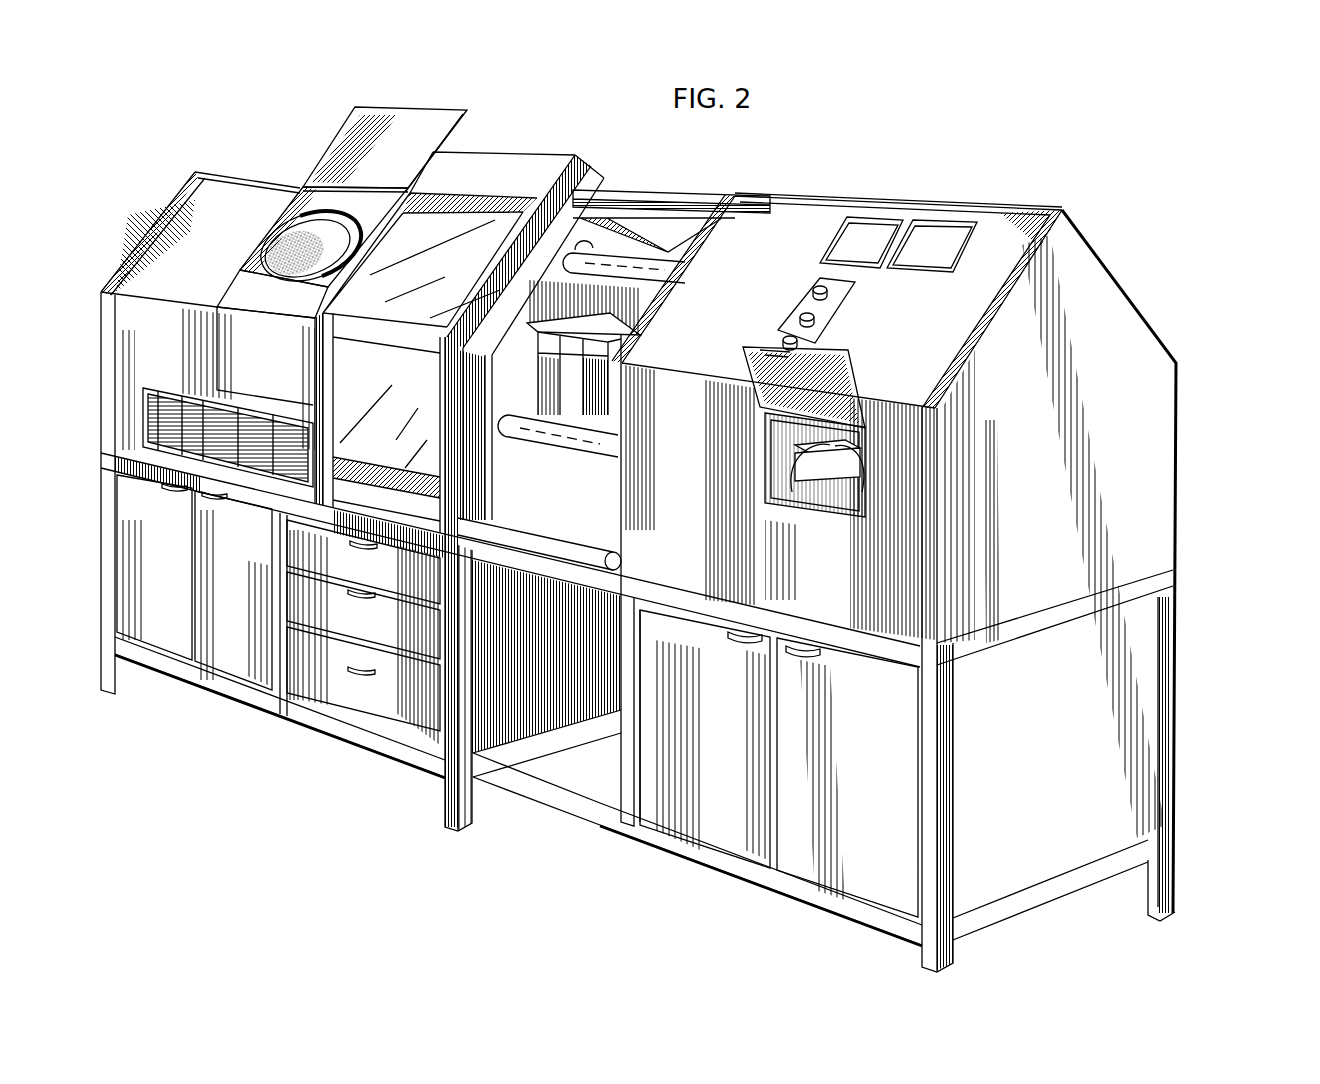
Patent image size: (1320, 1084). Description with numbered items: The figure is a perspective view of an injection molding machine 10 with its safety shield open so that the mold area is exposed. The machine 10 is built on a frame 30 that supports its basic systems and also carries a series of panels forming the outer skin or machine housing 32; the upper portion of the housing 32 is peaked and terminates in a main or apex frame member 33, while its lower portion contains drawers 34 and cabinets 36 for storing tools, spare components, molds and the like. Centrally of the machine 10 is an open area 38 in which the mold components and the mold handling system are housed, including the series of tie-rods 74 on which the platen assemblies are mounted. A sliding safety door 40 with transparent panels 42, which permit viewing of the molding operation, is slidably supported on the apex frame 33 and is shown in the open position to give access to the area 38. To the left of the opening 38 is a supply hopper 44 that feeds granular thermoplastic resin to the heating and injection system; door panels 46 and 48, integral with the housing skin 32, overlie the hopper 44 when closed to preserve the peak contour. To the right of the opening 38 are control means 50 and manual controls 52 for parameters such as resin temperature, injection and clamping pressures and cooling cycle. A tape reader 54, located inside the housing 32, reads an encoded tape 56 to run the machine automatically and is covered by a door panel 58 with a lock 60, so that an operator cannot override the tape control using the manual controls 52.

The machine 10 is at (1150, 262).
The frame 30 is at (103, 499).
The machine housing 32 is at (215, 190).
The apex frame member 33 is at (1008, 213).
The drawers 34 is at (302, 657).
The cabinets 36 is at (213, 647).
The open area 38 is at (602, 226).
The safety door 40 is at (506, 150).
The transparent panels 42 is at (420, 278).
The supply hopper 44 is at (312, 226).
The door panel 46 is at (442, 132).
The door panel 48 is at (240, 297).
The control means 50 is at (935, 222).
The manual controls 52 is at (823, 298).
The tape reader 54 is at (853, 449).
The tape 56 is at (780, 488).
The door panel 58 is at (838, 378).
The lock 60 is at (780, 350).
The tie-rods 74 is at (683, 260).